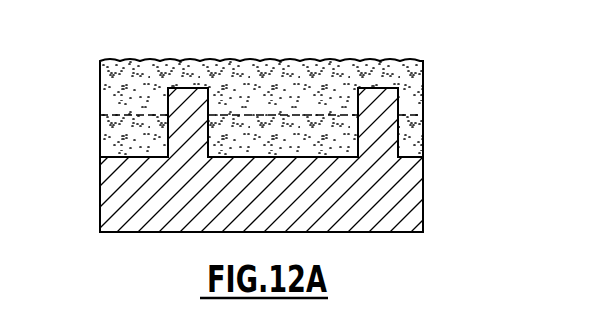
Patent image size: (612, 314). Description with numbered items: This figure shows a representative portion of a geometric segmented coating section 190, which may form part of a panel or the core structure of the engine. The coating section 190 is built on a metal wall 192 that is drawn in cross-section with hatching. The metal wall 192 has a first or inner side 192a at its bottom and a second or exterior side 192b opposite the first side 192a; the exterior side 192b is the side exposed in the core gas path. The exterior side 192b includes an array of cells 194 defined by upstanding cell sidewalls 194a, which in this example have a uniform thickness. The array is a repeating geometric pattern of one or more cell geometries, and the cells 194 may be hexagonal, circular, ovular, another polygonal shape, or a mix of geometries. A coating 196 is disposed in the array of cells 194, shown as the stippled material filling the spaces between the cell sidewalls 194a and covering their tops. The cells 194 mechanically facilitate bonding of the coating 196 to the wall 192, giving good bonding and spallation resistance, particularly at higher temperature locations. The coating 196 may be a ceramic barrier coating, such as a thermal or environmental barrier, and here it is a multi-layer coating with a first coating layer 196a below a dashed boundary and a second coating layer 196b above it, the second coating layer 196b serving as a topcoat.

The geometric segmented coating section 190 is at (300, 176).
The metal wall 192 is at (160, 242).
The first or inner side 192a is at (348, 232).
The second or exterior side 192b is at (113, 155).
The cells 194 is at (274, 98).
The cell sidewalls 194a is at (208, 96).
The coating 196 is at (293, 83).
The first coating layer 196a is at (412, 137).
The second coating layer 196b is at (412, 88).